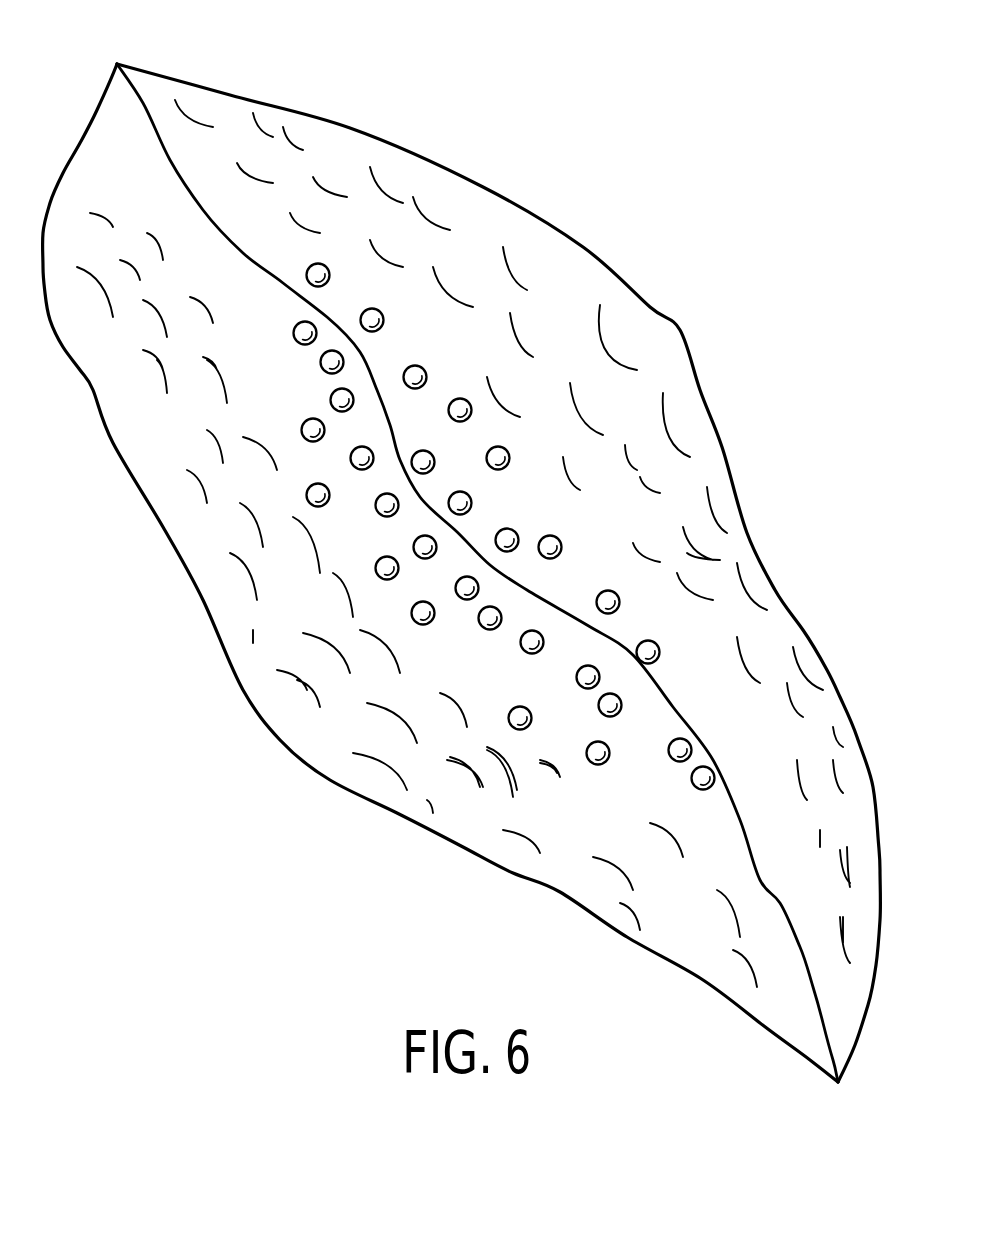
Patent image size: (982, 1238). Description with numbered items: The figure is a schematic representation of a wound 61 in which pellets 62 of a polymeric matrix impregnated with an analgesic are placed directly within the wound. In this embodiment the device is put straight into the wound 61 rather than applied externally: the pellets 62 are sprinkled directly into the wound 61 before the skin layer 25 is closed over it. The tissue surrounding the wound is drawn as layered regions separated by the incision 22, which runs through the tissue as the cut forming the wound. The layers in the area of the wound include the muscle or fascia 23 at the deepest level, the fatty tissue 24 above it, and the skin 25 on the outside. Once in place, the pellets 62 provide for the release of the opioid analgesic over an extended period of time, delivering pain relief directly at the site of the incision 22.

The incision 22 is at (713, 760).
The muscle or fascia 23 is at (575, 638).
The fatty tissue 24 is at (692, 555).
The skin 25 is at (672, 340).
The wound 61 is at (297, 193).
The pellets 62 is at (418, 372).